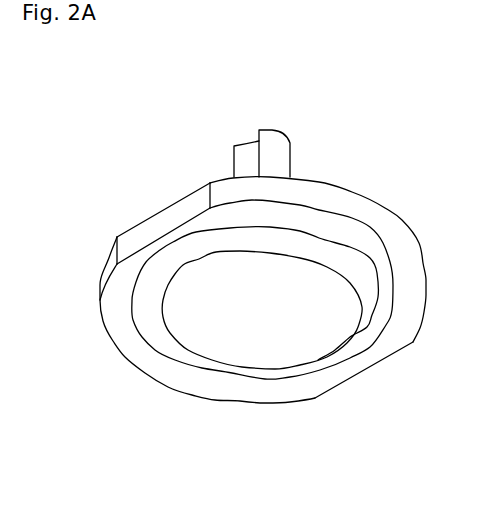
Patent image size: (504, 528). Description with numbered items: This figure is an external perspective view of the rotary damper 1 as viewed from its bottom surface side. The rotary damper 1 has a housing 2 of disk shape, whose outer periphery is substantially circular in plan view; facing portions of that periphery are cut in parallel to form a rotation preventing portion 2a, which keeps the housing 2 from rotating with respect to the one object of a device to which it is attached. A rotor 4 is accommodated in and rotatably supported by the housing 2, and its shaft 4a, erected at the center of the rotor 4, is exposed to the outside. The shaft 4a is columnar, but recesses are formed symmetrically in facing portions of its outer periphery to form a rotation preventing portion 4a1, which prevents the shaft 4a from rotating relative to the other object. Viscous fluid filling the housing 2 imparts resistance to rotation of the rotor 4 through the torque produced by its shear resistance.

The rotary damper 1 is at (424, 82).
The housing 2 is at (396, 222).
The rotation preventing portion 2a is at (163, 228).
The rotor 4 is at (244, 146).
The shaft 4a is at (284, 151).
The rotation preventing portion 4a1 is at (244, 160).